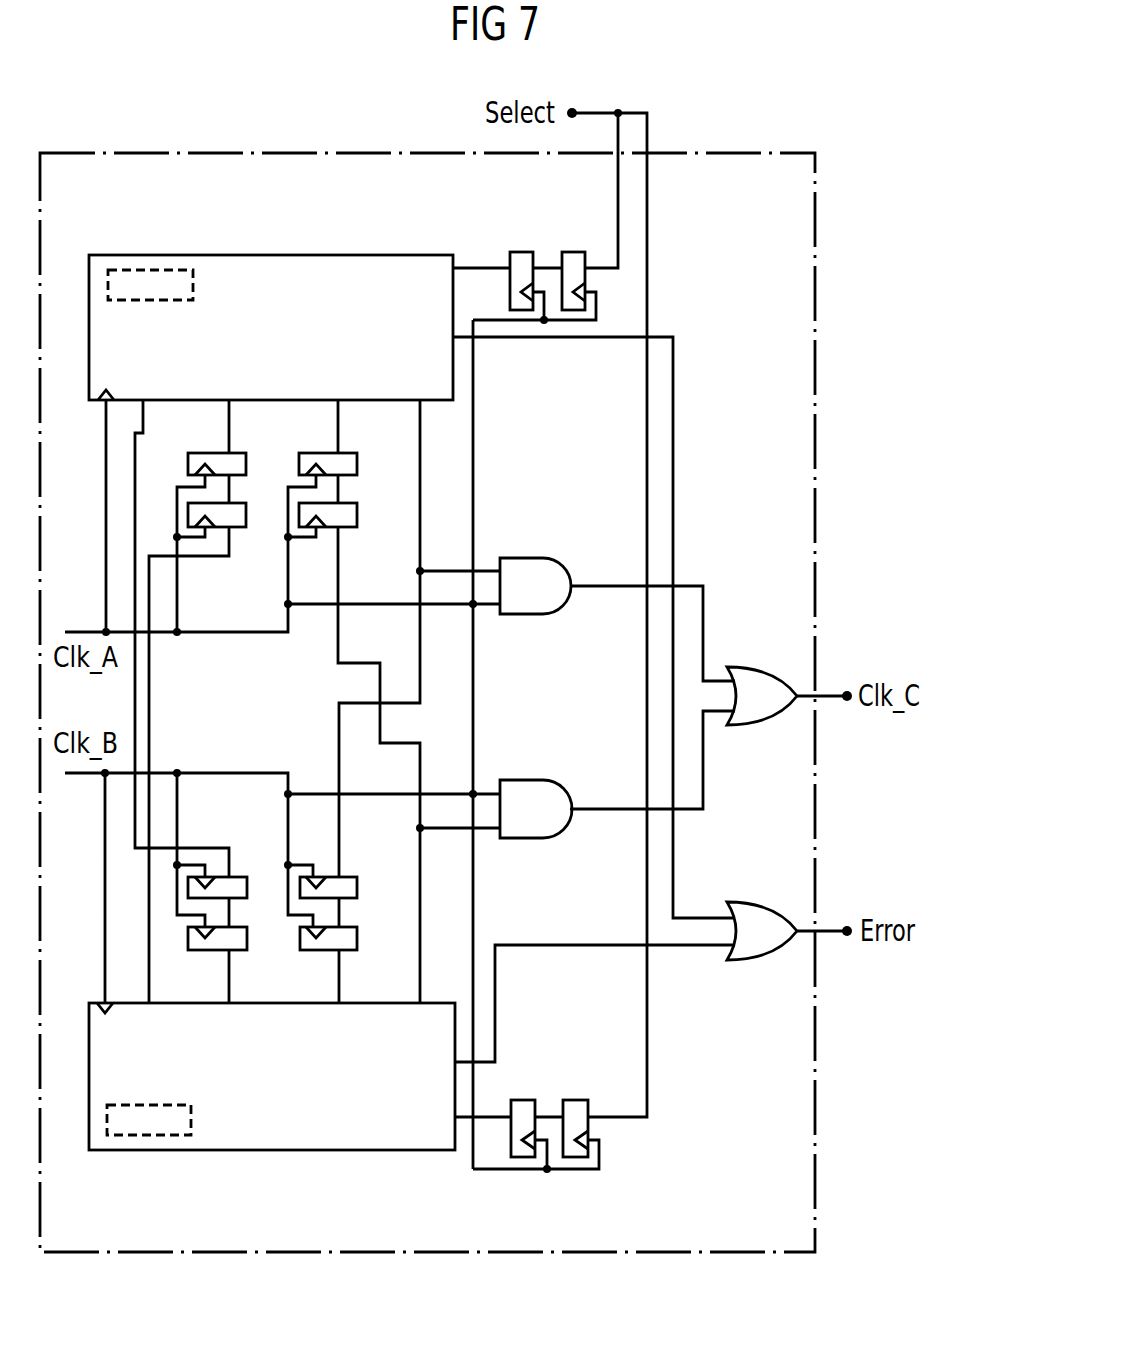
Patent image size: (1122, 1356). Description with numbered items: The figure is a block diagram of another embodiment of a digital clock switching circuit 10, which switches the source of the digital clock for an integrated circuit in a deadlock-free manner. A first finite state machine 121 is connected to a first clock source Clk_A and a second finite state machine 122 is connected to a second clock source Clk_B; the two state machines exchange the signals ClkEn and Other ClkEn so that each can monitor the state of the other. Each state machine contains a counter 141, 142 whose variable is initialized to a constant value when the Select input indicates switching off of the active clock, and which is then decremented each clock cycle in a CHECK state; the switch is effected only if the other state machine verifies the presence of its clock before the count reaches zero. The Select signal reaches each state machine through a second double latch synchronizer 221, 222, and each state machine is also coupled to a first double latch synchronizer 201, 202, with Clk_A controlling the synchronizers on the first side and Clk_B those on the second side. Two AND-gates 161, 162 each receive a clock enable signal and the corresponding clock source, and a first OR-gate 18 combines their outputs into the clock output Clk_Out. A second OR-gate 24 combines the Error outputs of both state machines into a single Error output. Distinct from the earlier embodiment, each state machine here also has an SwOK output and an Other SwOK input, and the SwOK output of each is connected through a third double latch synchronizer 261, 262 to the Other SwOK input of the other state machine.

The digital clock switching circuit 10 is at (462, 1254).
The first finite state machine 121 is at (293, 253).
The second finite state machine 122 is at (296, 1152).
The counter 141 is at (153, 268).
The counter 142 is at (134, 1137).
The AND-gate 161 is at (523, 557).
The AND-gate 162 is at (523, 840).
The first OR-gate 18 is at (743, 665).
The first double latch synchronizer 201 is at (347, 528).
The first double latch synchronizer 202 is at (348, 875).
The second double latch synchronizer 221 is at (520, 250).
The second double latch synchronizer 222 is at (577, 1098).
The second OR-gate 24 is at (743, 902).
The third double latch synchronizer 261 is at (237, 528).
The third double latch synchronizer 262 is at (237, 875).